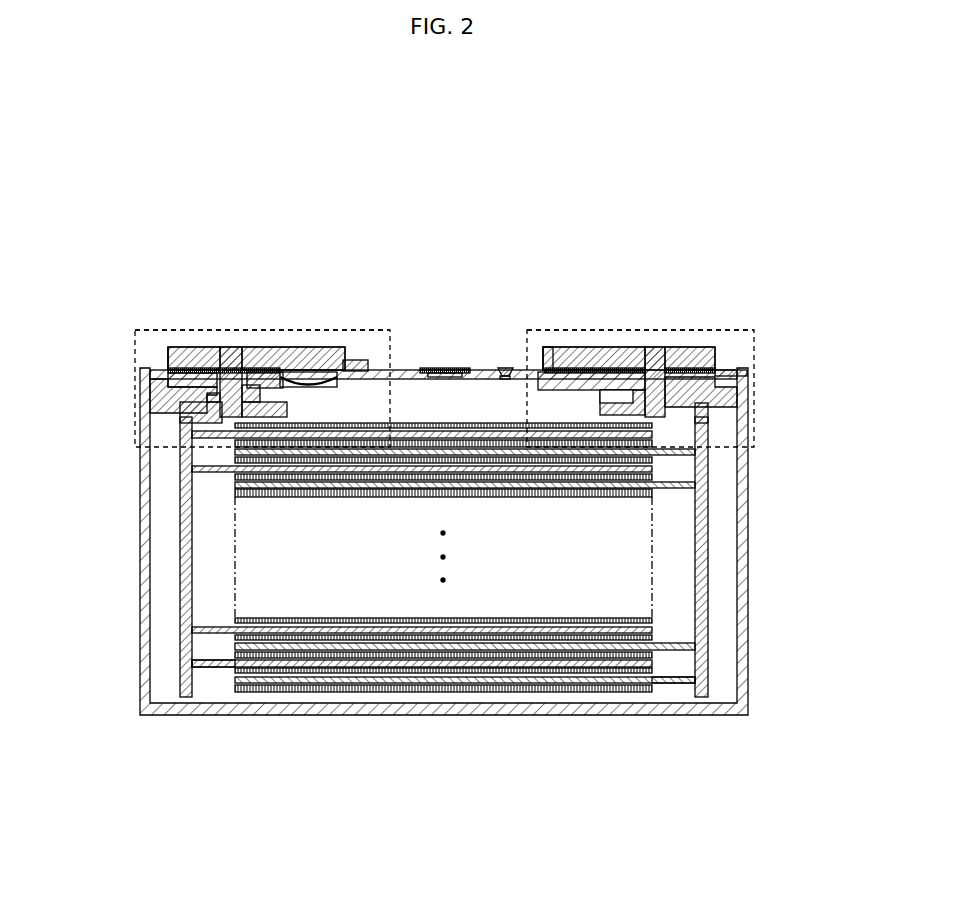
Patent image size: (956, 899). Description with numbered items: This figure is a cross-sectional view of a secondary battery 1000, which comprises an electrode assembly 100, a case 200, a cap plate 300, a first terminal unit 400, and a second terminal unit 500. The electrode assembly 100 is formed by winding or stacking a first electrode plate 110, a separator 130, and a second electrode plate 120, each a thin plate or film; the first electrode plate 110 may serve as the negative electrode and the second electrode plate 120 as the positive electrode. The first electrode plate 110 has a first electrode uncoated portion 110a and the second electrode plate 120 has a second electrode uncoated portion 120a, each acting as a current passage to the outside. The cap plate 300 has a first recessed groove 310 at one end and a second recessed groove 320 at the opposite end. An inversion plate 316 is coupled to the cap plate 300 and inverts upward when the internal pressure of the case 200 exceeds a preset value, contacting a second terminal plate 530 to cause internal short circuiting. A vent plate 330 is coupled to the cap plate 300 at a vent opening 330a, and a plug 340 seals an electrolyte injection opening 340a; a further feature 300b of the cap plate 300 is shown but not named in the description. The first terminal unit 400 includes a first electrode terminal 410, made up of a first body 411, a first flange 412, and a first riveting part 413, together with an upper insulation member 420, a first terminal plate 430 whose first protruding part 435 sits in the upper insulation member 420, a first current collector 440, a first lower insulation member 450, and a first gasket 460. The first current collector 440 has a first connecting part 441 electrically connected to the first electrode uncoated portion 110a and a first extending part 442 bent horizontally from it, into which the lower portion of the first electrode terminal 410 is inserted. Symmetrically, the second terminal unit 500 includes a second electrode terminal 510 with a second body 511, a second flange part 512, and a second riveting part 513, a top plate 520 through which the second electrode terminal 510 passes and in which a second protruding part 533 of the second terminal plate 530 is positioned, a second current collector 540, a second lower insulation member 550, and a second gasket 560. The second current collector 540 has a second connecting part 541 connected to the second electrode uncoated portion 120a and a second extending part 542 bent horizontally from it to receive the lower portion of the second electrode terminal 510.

The secondary battery 1000 is at (94, 273).
The electrode assembly 100 is at (78, 469).
The first electrode plate 110 is at (187, 470).
The first electrode uncoated portion 110a is at (209, 670).
The second electrode plate 120 is at (240, 480).
The second electrode uncoated portion 120a is at (676, 685).
The separator 130 is at (240, 462).
The case 200 is at (146, 590).
The cap plate 300 is at (410, 372).
The cap plate recess 300b is at (440, 370).
The first recessed groove 310 is at (170, 352).
The inversion plate 316 is at (298, 386).
The second recessed groove 320 is at (718, 358).
The vent plate 330 is at (452, 370).
The vent opening 330a is at (445, 379).
The plug 340 is at (506, 368).
The electrolyte injection opening 340a is at (506, 378).
The first terminal unit 400 is at (133, 341).
The first electrode terminal 410 is at (303, 296).
The first body 411 is at (233, 347).
The first flange 412 is at (262, 347).
The first riveting part 413 is at (210, 347).
The upper insulation member 420 is at (349, 360).
The first terminal plate 430 is at (196, 370).
The first protruding part 435 is at (332, 386).
The first current collector 440 is at (78, 401).
The first connecting part 441 is at (186, 447).
The first extending part 442 is at (195, 406).
The first lower insulation member 450 is at (162, 395).
The first gasket 460 is at (172, 380).
The second terminal unit 500 is at (758, 341).
The second electrode terminal 510 is at (730, 296).
The second body 511 is at (656, 347).
The second flange part 512 is at (690, 347).
The second riveting part 513 is at (641, 347).
The top plate 520 is at (726, 374).
The second terminal plate 530 is at (566, 347).
The second protruding part 533 is at (563, 373).
The second current collector 540 is at (818, 462).
The second connecting part 541 is at (710, 507).
The second extending part 542 is at (706, 418).
The second lower insulation member 550 is at (702, 395).
The second gasket 560 is at (618, 397).